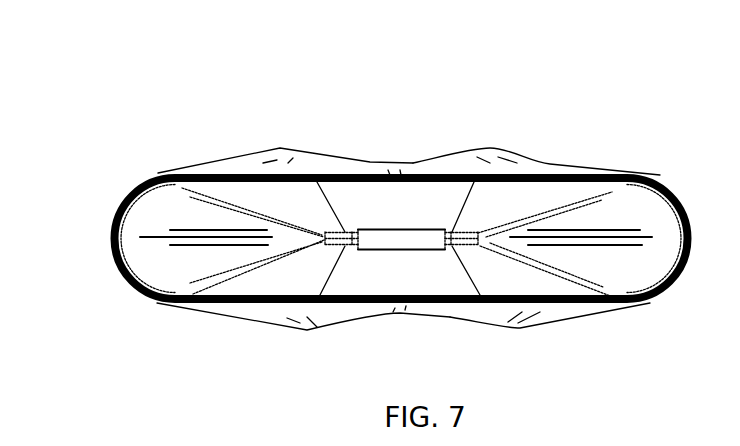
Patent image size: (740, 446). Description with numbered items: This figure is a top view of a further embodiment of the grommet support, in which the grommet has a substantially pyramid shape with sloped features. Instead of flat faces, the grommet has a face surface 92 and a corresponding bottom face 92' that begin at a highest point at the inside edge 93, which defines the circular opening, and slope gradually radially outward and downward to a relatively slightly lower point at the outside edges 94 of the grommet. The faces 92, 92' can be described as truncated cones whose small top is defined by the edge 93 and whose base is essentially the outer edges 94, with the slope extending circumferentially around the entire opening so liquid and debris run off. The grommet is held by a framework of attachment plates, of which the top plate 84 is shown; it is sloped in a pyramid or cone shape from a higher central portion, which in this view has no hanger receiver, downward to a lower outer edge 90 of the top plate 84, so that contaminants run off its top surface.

The top attachment plate 84 is at (350, 195).
The lower outer edge of the top plate 90 is at (292, 296).
The face surface 92 is at (540, 118).
The bottom face surface 92' is at (570, 357).
The inside edge 93 is at (371, 160).
The outside edges 94 is at (160, 174).